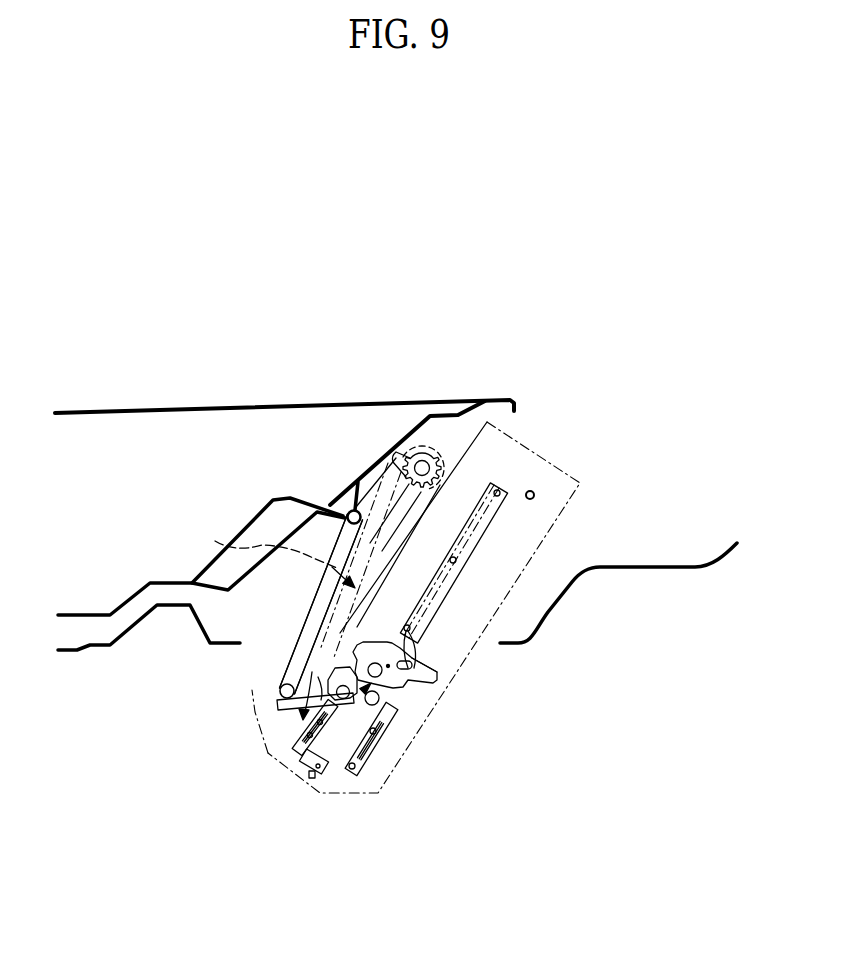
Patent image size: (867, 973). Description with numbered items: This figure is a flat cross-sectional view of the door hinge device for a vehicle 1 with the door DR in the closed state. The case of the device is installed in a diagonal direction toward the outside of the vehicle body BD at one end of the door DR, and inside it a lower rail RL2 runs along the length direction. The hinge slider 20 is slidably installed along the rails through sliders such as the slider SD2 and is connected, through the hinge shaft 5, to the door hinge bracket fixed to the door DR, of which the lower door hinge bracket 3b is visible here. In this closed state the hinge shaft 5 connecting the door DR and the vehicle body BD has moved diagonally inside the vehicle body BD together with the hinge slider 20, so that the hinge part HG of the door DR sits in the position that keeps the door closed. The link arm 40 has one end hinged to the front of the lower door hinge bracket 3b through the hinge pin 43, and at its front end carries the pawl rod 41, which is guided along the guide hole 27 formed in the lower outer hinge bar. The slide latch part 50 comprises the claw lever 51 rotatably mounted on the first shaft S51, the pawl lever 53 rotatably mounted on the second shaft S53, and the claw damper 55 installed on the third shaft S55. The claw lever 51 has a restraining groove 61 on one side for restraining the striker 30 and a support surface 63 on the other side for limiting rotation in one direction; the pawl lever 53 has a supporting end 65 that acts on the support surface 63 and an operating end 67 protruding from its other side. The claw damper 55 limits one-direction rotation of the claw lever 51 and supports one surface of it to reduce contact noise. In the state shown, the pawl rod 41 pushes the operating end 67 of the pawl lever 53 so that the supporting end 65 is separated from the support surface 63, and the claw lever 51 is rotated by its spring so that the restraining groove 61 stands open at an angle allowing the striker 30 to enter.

The door hinge device for a vehicle 1 is at (579, 464).
The lower door hinge bracket 3b is at (333, 507).
The hinge shaft 5 is at (366, 474).
The hinge part HG is at (402, 442).
The door DR is at (250, 406).
The vehicle body BD is at (667, 570).
The hinge slider 20 is at (257, 736).
The guide hole 27 is at (230, 541).
The striker 30 is at (535, 495).
The lower rail RL2 is at (505, 500).
The link arm 40 is at (275, 497).
The pawl rod 41 is at (282, 692).
The hinge pin 43 is at (337, 543).
The slide latch part 50 is at (372, 638).
The claw lever 51 is at (397, 683).
The first shaft S51 is at (412, 627).
The pawl lever 53 is at (317, 685).
The second shaft S53 is at (340, 705).
The claw damper 55 is at (381, 700).
The third shaft S55 is at (372, 710).
The restraining groove 61 is at (420, 661).
The support surface 63 is at (335, 720).
The supporting end 65 is at (337, 673).
The operating end 67 is at (292, 697).
The slider SD2 is at (325, 800).